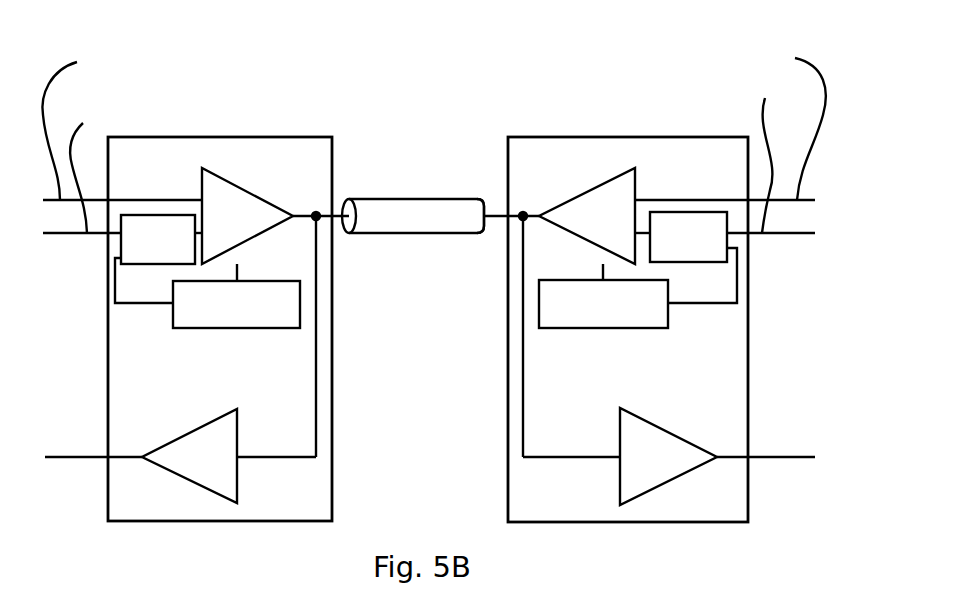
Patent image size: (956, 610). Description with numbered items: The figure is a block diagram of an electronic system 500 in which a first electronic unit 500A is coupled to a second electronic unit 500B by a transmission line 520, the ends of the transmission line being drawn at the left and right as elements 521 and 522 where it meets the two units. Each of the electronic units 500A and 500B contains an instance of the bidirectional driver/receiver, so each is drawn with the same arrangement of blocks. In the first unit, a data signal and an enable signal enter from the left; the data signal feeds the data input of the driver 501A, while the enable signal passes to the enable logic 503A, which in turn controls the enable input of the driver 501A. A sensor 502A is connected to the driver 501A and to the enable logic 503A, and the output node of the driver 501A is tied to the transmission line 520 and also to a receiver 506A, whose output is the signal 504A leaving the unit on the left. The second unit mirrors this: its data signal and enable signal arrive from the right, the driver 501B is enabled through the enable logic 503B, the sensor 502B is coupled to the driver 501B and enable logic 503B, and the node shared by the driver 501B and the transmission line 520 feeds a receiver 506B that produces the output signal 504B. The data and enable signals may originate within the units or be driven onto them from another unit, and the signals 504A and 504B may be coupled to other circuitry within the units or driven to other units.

The electronic system 500 is at (458, 88).
The first electronic unit 500A is at (222, 137).
The second electronic unit 500B is at (652, 137).
The driver 501A is at (243, 189).
The driver 501B is at (596, 187).
The sensor 502A is at (207, 328).
The sensor 502B is at (572, 328).
The enable logic 503A is at (133, 264).
The enable logic 503B is at (700, 262).
The signal 504A is at (56, 456).
The signal 504B is at (765, 456).
The first receiver 506A is at (205, 425).
The second receiver 506B is at (635, 416).
The transmission line 520 is at (388, 199).
The first end of transmission line 521 is at (341, 204).
The second end of transmission line 522 is at (492, 212).